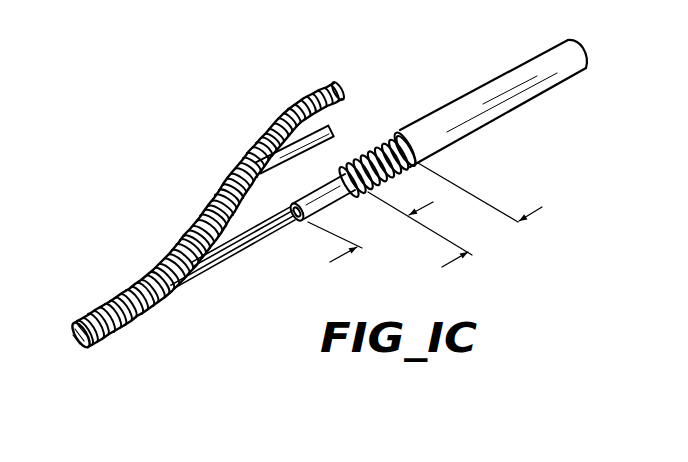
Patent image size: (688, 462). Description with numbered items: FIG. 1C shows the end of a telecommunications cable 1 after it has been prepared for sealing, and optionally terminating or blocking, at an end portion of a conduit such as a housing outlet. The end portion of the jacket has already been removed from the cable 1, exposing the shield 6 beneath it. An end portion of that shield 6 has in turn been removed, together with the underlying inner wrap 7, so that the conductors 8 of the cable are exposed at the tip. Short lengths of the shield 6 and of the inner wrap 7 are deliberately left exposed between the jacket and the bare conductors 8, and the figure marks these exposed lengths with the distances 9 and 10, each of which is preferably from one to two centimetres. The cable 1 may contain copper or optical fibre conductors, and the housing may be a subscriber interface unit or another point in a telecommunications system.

The cable 1 is at (467, 92).
The shield 6 is at (248, 150).
The inner wrap 7 is at (323, 203).
The conductors 8 is at (239, 252).
The distance 9 is at (390, 227).
The distance 10 is at (480, 215).